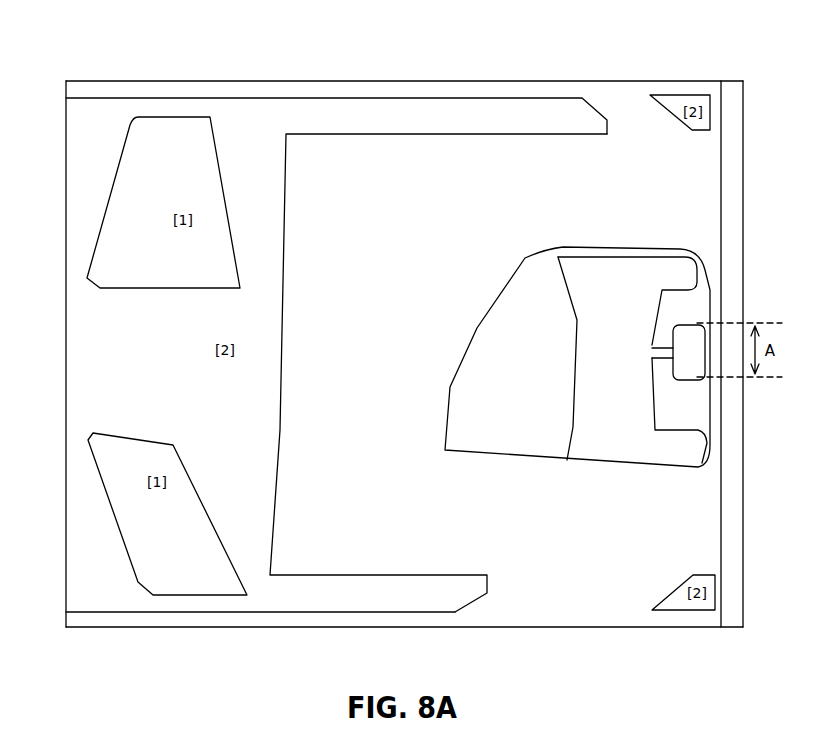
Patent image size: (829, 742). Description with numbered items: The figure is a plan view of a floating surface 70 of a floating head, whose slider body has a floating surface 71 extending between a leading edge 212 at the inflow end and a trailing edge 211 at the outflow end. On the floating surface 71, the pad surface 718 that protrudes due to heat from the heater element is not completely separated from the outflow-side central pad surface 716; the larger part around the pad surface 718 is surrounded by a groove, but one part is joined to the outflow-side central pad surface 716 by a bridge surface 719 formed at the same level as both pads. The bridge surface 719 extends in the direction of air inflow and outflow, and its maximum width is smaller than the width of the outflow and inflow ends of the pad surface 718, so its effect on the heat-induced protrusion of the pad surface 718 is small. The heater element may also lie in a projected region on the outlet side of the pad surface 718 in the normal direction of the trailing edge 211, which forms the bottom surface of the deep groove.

The floating surface 70 is at (33, 332).
The floating surface of the slider body 71 is at (422, 462).
The trailing edge 211 is at (720, 240).
The leading edge 212 is at (66, 478).
The outflow-side central pad surface 716 is at (631, 393).
The pad surface 718 is at (673, 327).
The bridge surface 719 is at (657, 360).